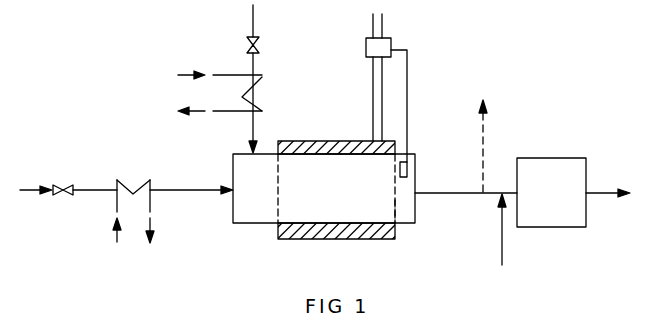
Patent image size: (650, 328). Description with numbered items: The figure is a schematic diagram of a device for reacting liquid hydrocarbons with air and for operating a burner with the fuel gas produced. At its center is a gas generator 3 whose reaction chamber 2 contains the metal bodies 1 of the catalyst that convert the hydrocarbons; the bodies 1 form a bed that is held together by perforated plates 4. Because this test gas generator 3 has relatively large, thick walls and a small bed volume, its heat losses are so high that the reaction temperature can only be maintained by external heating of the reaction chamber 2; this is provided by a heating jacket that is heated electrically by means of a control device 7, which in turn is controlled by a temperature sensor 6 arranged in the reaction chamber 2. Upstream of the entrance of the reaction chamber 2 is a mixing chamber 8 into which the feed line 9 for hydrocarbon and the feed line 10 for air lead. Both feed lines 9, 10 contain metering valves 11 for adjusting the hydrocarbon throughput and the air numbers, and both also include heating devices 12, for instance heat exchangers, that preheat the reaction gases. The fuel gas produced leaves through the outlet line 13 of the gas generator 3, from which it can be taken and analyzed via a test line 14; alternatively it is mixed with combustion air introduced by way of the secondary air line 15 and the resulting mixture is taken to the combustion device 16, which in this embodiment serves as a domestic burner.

The metal bodies 1 is at (298, 207).
The reaction chamber 2 is at (408, 226).
The gas generator 3 is at (411, 152).
The perforated plates 4 is at (397, 218).
The temperature sensor 6 is at (409, 170).
The control device 7 is at (386, 45).
The mixing chamber 8 is at (240, 172).
The feed line 9 is at (89, 188).
The feed line 10 is at (257, 128).
The metering valves 11 is at (66, 196).
The heating devices 12 is at (147, 182).
The outlet line 13 is at (462, 196).
The test line 14 is at (485, 129).
The secondary air line 15 is at (503, 257).
The combustion device 16 is at (555, 157).